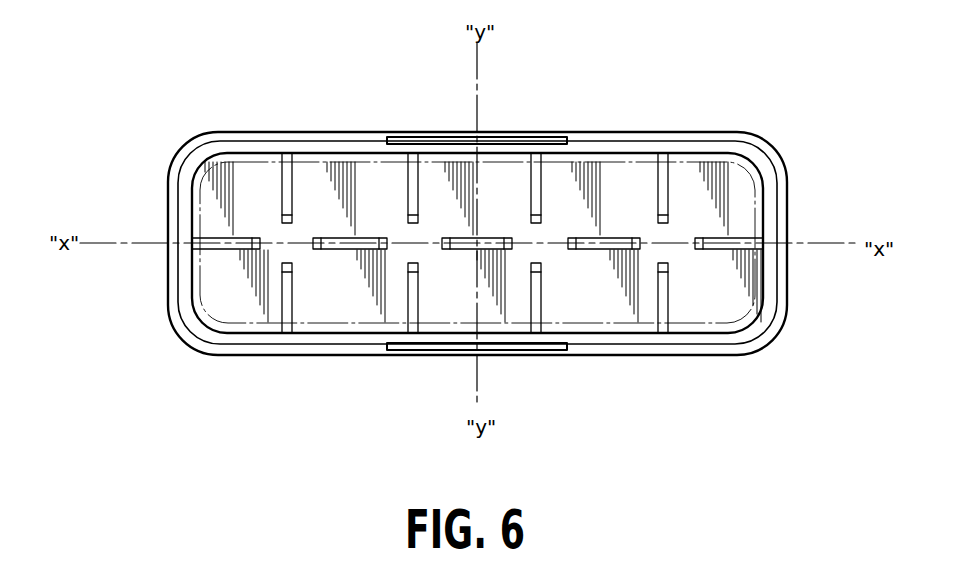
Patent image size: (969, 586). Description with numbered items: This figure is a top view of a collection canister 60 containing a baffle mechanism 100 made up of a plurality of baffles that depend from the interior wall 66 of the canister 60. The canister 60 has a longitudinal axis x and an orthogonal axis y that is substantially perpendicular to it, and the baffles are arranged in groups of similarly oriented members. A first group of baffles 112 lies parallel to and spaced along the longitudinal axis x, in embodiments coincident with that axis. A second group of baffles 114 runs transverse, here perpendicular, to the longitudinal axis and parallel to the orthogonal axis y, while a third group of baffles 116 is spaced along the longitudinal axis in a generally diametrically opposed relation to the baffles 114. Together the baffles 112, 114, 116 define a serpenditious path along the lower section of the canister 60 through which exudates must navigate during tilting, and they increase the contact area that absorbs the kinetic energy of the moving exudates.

The collection canister 60 is at (240, 63).
The interior wall 66 is at (753, 203).
The baffle mechanism 100 is at (257, 195).
The baffles 112 is at (215, 237).
The baffles 114 is at (282, 173).
The baffles 116 is at (292, 305).